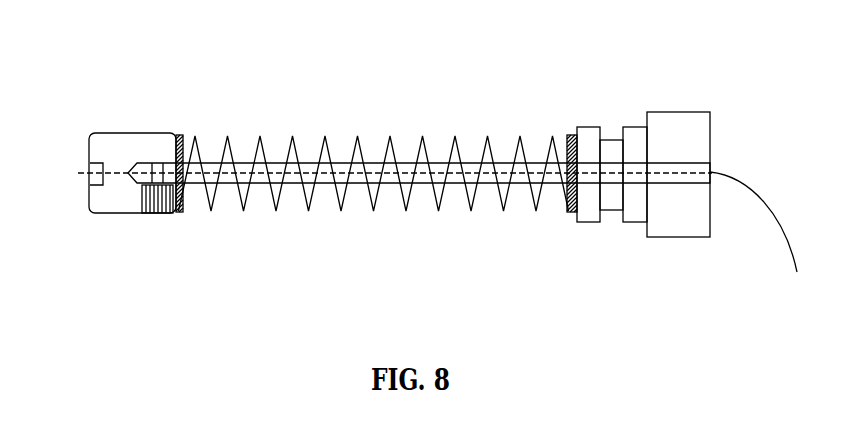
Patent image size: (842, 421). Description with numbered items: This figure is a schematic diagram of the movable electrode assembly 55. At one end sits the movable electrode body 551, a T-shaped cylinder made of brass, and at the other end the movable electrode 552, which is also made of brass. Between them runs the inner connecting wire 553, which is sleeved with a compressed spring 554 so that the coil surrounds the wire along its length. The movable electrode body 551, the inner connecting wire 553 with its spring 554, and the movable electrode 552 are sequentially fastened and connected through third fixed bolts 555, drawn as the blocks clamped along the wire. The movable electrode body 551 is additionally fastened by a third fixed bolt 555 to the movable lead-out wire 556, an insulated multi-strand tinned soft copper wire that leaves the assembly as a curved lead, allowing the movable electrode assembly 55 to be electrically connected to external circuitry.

The movable electrode assembly 55 is at (509, 232).
The movable electrode body 551 is at (710, 113).
The movable electrode 552 is at (152, 140).
The inner connecting wire 553 is at (293, 141).
The spring 554 is at (441, 121).
The third fixed bolts 555 is at (528, 85).
The movable lead-out wire 556 is at (747, 213).